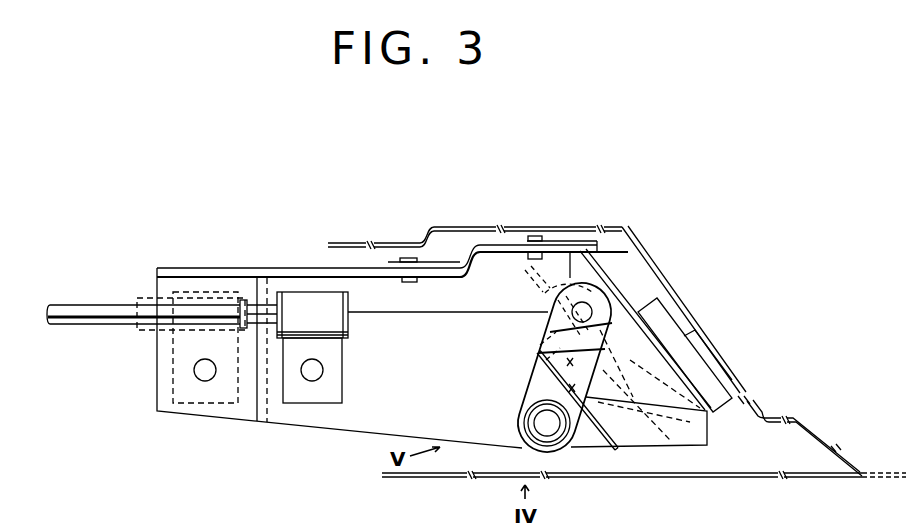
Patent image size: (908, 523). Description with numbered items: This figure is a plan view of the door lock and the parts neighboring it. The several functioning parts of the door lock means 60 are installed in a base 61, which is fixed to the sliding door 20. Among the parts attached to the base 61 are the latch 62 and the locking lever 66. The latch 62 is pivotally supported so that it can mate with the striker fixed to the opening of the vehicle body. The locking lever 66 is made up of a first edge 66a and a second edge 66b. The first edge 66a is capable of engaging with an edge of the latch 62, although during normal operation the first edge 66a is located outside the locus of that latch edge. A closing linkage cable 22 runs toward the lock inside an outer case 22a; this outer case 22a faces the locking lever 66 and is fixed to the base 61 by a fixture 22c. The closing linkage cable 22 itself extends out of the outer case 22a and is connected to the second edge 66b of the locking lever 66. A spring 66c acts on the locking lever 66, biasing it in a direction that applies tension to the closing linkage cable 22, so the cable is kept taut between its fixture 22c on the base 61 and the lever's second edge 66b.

The sliding door 20 is at (852, 458).
The closing linkage cable 22 is at (48, 312).
The outer case 22a is at (96, 308).
The fixture 22c is at (330, 335).
The door lock means 60 is at (302, 446).
The base 61 is at (382, 271).
The latch 62 is at (668, 334).
The locking lever 66 is at (528, 383).
The first edge 66a is at (706, 447).
The second edge 66b is at (557, 302).
The spring 66c is at (523, 421).